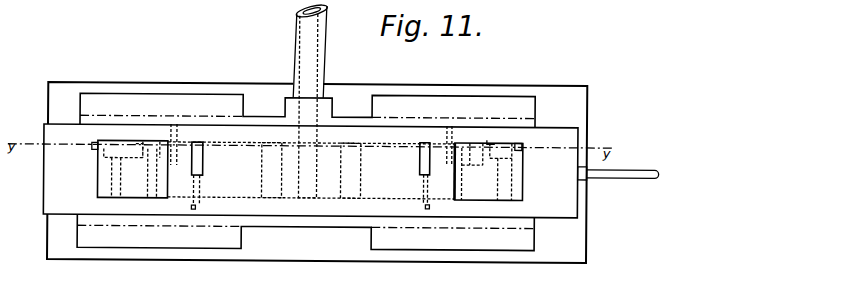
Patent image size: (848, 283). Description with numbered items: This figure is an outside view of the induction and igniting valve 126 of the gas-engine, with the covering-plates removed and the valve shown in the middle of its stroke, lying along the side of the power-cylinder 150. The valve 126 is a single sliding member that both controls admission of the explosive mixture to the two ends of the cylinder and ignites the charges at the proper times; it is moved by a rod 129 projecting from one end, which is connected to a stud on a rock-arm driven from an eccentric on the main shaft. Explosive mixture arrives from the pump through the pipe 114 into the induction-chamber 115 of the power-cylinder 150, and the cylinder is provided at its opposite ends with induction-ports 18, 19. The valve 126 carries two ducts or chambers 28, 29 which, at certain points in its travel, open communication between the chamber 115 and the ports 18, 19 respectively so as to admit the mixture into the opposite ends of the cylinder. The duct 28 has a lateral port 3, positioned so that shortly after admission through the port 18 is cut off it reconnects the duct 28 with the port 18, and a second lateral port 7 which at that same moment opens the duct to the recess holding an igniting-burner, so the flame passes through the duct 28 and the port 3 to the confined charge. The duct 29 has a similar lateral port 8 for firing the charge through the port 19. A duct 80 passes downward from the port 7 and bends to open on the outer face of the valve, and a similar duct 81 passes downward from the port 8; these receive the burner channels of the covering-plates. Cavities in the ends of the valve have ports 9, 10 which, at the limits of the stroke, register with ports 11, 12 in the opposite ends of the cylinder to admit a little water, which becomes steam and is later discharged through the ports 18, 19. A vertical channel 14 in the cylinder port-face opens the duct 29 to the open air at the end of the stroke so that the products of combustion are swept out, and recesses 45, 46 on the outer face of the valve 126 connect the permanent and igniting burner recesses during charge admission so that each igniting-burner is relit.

The lateral port 3 is at (175, 144).
The lateral port 7 is at (203, 164).
The lateral port 8 is at (420, 160).
The port 9 is at (140, 143).
The port 10 is at (492, 136).
The port 11 is at (95, 138).
The port 12 is at (519, 143).
The vertical channel 14 is at (471, 171).
The induction-port 18 is at (157, 182).
The induction-port 19 is at (472, 198).
The duct 28 is at (118, 182).
The duct 29 is at (366, 200).
The recess 45 is at (98, 194).
The recess 46 is at (523, 191).
The duct 80 is at (204, 187).
The duct 81 is at (427, 185).
The pipe 114 is at (310, 100).
The induction-chamber 115 is at (312, 196).
The induction and igniting valve 126 is at (310, 171).
The rod 129 is at (630, 178).
The power-cylinder 150 is at (317, 172).